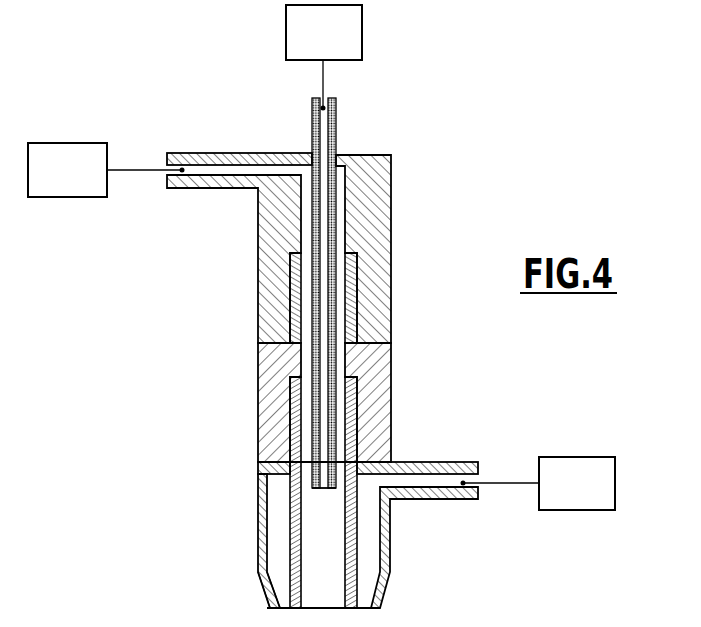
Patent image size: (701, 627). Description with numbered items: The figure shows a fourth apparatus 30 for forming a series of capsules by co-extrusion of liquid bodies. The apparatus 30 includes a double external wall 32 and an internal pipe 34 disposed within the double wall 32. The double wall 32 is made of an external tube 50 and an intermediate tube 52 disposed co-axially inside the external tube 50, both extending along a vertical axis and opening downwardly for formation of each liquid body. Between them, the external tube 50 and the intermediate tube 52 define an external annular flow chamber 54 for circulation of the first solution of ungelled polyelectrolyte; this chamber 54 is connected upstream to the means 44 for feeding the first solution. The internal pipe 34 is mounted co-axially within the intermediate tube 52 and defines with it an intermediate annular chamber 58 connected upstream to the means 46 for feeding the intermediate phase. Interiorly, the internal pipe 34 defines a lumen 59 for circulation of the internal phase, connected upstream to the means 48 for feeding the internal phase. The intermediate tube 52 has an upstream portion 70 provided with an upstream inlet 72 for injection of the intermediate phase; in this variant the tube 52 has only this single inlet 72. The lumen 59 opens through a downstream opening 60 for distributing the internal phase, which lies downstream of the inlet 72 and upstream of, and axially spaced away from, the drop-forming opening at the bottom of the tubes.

The apparatus 30 is at (462, 105).
The double external wall 32 is at (235, 507).
The internal pipe 34 is at (337, 222).
The means for feeding the first solution 44 is at (580, 465).
The means for feeding the intermediate phase 46 is at (66, 145).
The means for feeding the internal phase 48 is at (298, 33).
The external tube 50 is at (260, 542).
The intermediate tube 52 is at (203, 272).
The external annular flow chamber 54 is at (293, 569).
The intermediate annular chamber 58 is at (307, 353).
The lumen 59 is at (326, 134).
The downstream opening 60 is at (322, 490).
The upstream portion 70 is at (392, 293).
The upstream inlet 72 is at (218, 153).